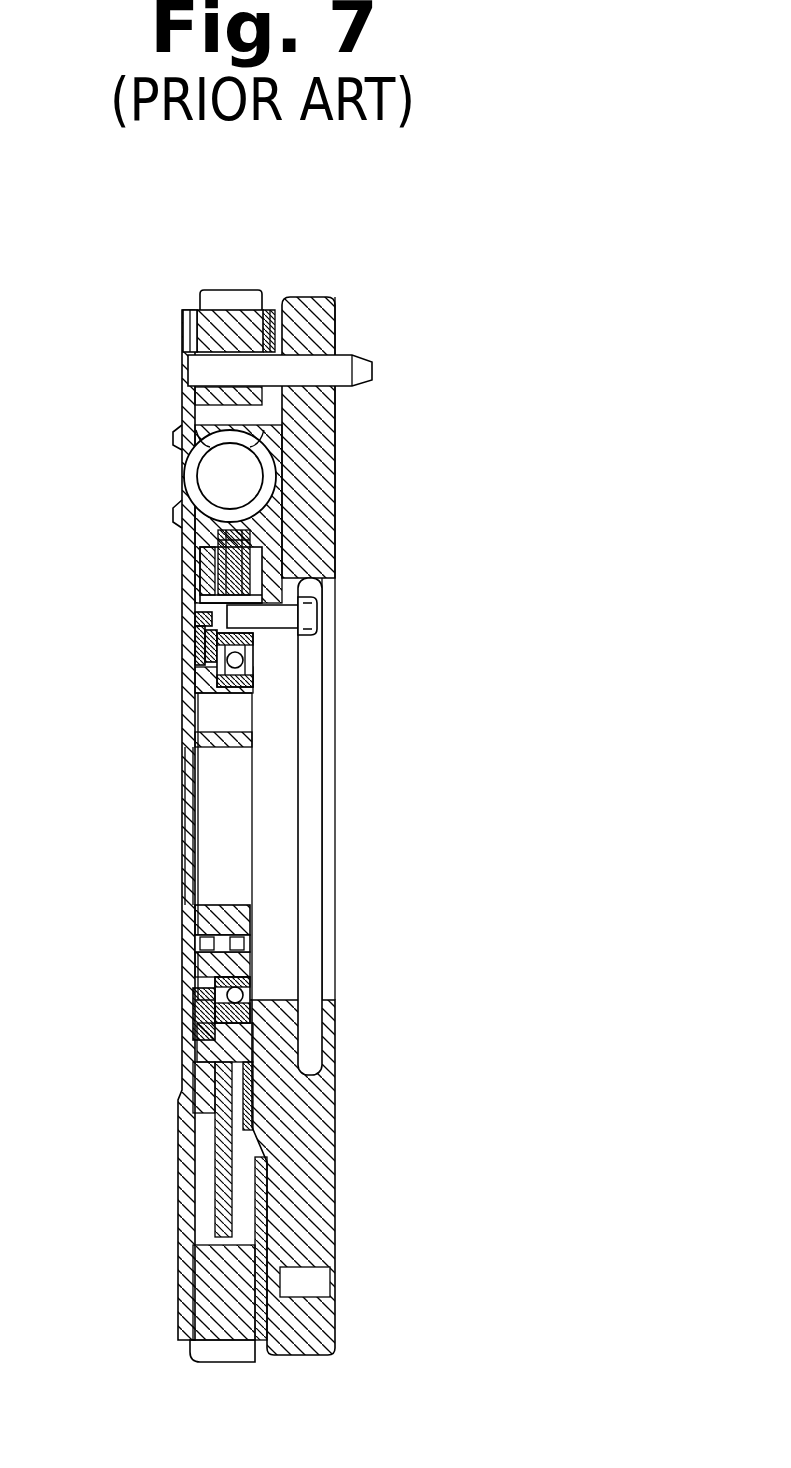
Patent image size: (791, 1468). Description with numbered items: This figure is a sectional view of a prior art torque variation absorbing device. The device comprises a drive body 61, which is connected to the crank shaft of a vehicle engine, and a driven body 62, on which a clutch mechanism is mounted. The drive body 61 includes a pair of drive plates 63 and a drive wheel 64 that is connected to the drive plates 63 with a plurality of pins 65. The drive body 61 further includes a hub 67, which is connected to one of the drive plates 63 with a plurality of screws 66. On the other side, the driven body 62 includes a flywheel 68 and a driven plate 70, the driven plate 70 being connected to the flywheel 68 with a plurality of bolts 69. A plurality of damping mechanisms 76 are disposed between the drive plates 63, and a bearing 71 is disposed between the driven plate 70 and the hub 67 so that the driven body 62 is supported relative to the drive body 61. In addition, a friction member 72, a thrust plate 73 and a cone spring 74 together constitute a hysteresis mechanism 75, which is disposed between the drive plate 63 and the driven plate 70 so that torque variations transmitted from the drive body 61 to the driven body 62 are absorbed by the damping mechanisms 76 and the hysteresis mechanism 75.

The drive body 61 is at (165, 292).
The driven body 62 is at (343, 300).
The drive plates 63 is at (273, 350).
The drive wheel 64 is at (180, 336).
The pins 65 is at (206, 368).
The screws 66 is at (196, 943).
The hub 67 is at (207, 920).
The flywheel 68 is at (313, 438).
The bolts 69 is at (305, 615).
The driven plate 70 is at (205, 565).
The bearing 71 is at (205, 1015).
The friction member 72 is at (222, 655).
The thrust plate 73 is at (196, 645).
The cone spring 74 is at (197, 620).
The hysteresis mechanism 75 is at (176, 633).
The damping mechanisms 76 is at (172, 472).